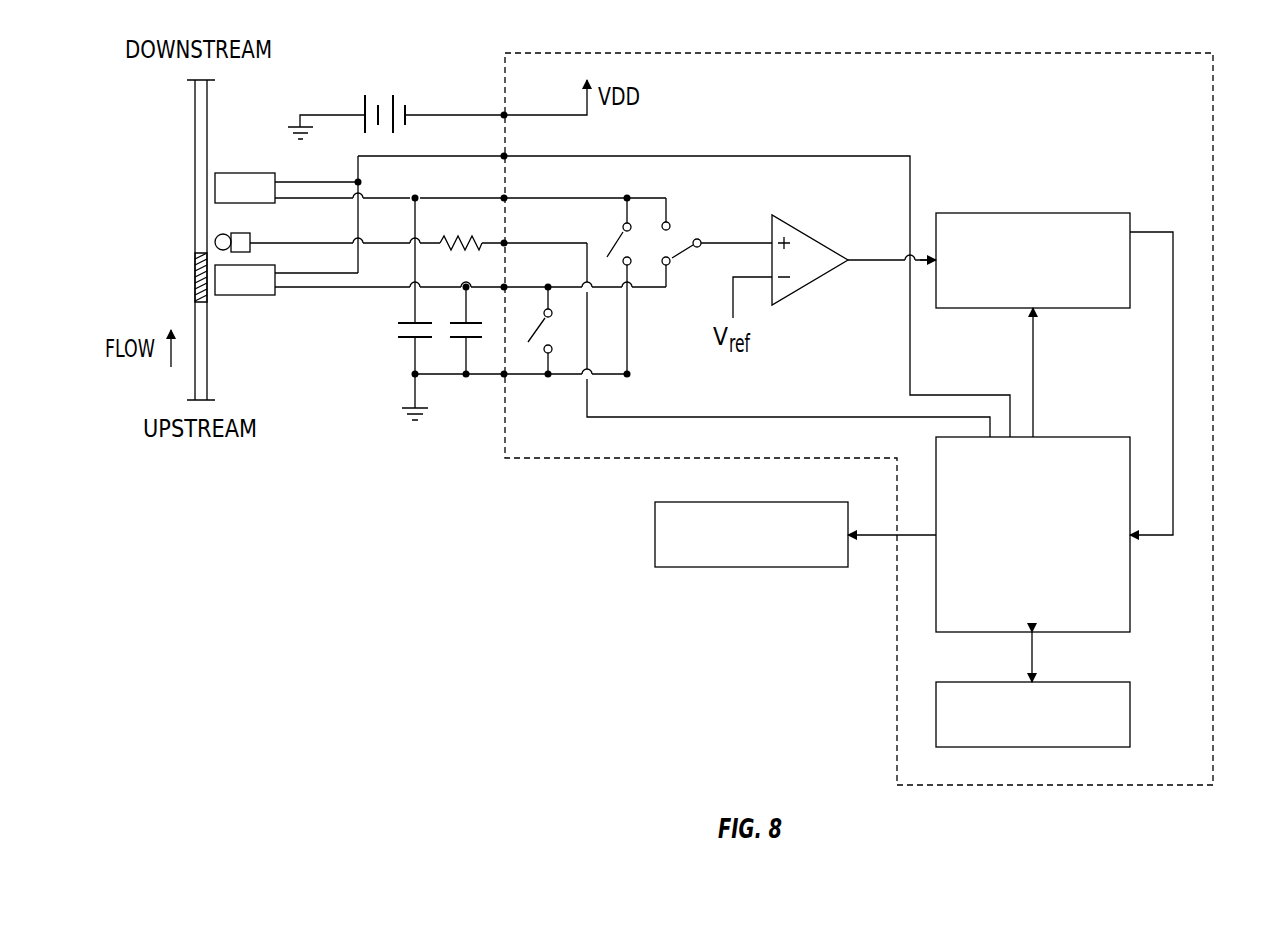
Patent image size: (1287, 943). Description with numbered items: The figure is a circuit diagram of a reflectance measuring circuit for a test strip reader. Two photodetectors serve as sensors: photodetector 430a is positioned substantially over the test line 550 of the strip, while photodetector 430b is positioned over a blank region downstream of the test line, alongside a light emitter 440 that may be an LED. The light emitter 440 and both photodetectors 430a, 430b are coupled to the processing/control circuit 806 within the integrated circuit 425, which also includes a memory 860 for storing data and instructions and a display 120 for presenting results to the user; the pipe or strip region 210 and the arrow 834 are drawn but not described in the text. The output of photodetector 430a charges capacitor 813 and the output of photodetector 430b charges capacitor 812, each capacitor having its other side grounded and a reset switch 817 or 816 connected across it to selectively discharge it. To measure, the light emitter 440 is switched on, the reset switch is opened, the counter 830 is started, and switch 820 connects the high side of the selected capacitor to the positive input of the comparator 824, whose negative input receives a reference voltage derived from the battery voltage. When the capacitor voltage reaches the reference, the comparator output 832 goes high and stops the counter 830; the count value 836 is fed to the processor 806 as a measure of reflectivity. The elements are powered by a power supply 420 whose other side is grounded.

The display 120 is at (790, 502).
The pipe 210 is at (195, 140).
The power supply 420 is at (378, 95).
The integrated circuit 425 is at (1213, 97).
The photodetector 430a is at (245, 295).
The photodetector 430b is at (244, 173).
The light emitter 440 is at (252, 235).
The test line 550 is at (193, 268).
The processing/control circuit 806 is at (1053, 476).
The capacitor 812 is at (397, 328).
The capacitor 813 is at (486, 332).
The reset switch 816 is at (612, 245).
The reset switch 817 is at (553, 332).
The switch 820 is at (682, 240).
The comparator 824 is at (808, 245).
The counter 830 is at (1052, 273).
The comparator output 832 is at (893, 265).
The start signal line 834 is at (1035, 365).
The count value 836 is at (1173, 408).
The memory 860 is at (1072, 682).